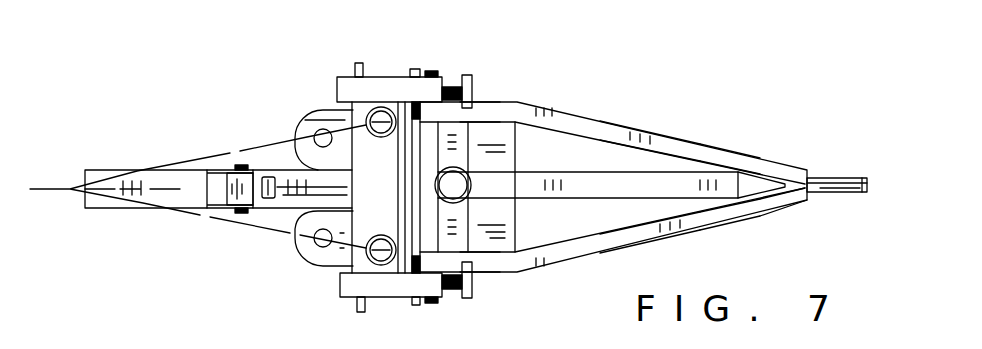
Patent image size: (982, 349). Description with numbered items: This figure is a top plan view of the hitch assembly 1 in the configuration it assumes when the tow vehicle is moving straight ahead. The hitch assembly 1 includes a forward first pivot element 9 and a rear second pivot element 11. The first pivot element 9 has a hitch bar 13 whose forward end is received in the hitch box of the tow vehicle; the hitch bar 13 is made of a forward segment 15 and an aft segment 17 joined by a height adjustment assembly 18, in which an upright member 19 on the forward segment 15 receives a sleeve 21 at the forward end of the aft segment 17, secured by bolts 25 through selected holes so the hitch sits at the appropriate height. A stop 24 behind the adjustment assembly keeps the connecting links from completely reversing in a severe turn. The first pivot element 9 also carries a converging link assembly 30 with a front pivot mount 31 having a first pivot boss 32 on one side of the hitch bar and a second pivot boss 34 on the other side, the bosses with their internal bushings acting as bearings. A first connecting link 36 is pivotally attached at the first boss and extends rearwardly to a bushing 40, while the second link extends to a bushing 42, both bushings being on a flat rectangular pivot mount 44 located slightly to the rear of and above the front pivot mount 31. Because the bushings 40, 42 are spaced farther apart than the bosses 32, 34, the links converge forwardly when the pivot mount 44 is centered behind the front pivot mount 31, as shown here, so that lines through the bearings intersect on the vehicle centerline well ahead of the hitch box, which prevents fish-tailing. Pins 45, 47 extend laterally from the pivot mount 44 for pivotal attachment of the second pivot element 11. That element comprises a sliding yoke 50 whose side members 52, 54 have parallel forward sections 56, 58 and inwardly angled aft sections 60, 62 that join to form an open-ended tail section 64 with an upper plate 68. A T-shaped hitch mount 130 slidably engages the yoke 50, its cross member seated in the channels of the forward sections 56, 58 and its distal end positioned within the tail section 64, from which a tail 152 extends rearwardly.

The hitch assembly 1 is at (622, 104).
The first pivot element 9 is at (297, 110).
The second pivot element 11 is at (492, 100).
The hitch bar 13 is at (105, 213).
The forward segment 15 is at (152, 183).
The aft segment 17 is at (228, 211).
The height adjustment assembly 18 is at (287, 198).
The upright member 19 is at (235, 178).
The sleeve 21 is at (253, 168).
The stop 24 is at (268, 176).
The bolts 25 is at (243, 213).
The converging link assembly 30 is at (322, 267).
The front pivot mount 31 is at (300, 214).
The first pivot boss 32 is at (326, 128).
The second pivot boss 34 is at (327, 246).
The first connecting link 36 is at (319, 120).
The bushing 40 is at (378, 106).
The bushing 42 is at (383, 262).
The pivot mount 44 is at (420, 112).
The pin 45 is at (355, 68).
The pin 47 is at (362, 312).
The yoke 50 is at (722, 142).
The side member 52 is at (658, 132).
The side member 54 is at (671, 240).
The forward section 56 is at (500, 112).
The forward section 58 is at (496, 262).
The aft section 60 is at (748, 166).
The aft section 62 is at (752, 204).
The tail section 64 is at (774, 198).
The upper plate 68 is at (760, 186).
The hitch mount 130 is at (565, 168).
The tail 152 is at (868, 186).